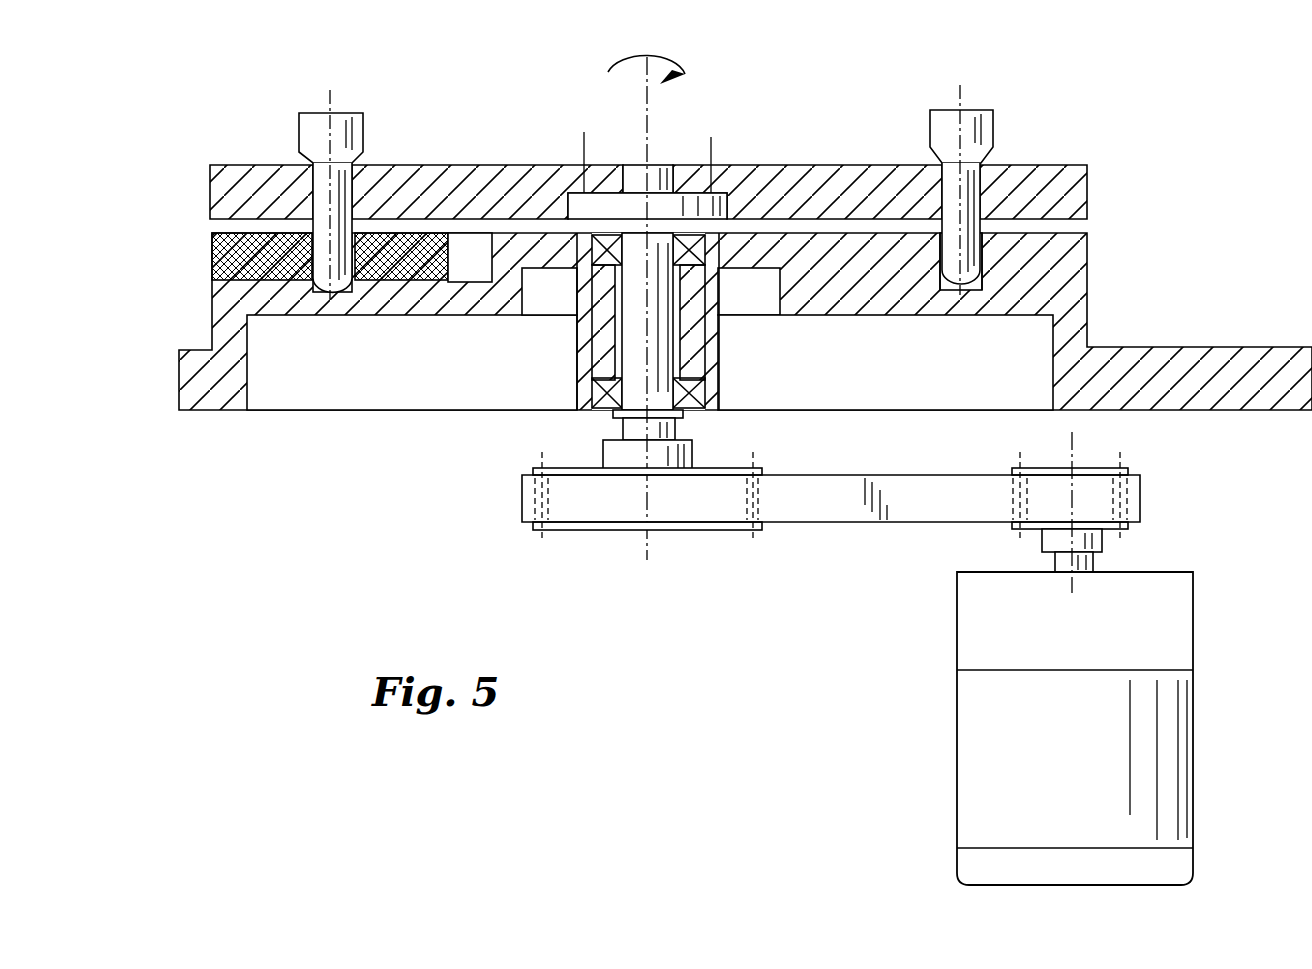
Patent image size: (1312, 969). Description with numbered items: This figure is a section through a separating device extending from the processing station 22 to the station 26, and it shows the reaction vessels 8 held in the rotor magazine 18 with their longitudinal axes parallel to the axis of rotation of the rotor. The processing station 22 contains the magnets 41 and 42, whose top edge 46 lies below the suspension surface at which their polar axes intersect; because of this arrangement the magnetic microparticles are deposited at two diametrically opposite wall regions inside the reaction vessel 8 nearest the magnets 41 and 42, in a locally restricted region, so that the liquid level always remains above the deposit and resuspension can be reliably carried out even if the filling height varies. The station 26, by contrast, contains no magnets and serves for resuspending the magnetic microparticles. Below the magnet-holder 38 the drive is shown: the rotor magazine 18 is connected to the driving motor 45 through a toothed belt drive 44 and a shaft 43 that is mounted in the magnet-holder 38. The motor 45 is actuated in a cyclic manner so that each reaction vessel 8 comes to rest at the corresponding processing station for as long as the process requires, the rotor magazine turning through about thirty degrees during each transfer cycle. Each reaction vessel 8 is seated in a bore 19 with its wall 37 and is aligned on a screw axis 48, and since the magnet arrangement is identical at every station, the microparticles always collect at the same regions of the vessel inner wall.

The reaction vessel 8 is at (342, 127).
The rotor magazine 18 is at (1092, 182).
The screw bore 19 is at (339, 285).
The processing station 22 is at (183, 205).
The station 26 is at (1057, 117).
The bore wall 37 is at (975, 287).
The magnet-holder 38 is at (1063, 253).
The magnet 41 is at (430, 282).
The magnet 42 is at (227, 263).
The shaft 43 is at (655, 352).
The toothed belt drive 44 is at (824, 508).
The driving motor 45 is at (965, 760).
The top edge 46 is at (403, 232).
The screw axis 48 is at (324, 100).